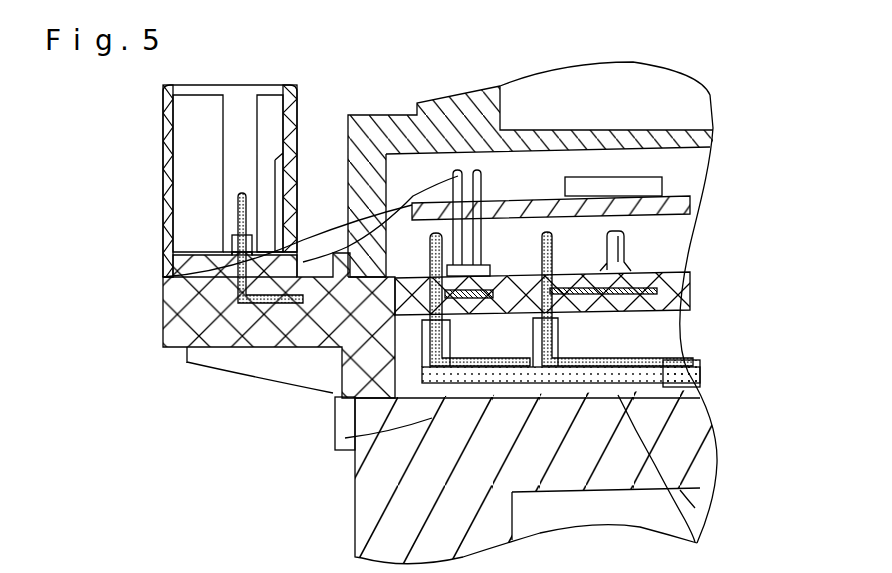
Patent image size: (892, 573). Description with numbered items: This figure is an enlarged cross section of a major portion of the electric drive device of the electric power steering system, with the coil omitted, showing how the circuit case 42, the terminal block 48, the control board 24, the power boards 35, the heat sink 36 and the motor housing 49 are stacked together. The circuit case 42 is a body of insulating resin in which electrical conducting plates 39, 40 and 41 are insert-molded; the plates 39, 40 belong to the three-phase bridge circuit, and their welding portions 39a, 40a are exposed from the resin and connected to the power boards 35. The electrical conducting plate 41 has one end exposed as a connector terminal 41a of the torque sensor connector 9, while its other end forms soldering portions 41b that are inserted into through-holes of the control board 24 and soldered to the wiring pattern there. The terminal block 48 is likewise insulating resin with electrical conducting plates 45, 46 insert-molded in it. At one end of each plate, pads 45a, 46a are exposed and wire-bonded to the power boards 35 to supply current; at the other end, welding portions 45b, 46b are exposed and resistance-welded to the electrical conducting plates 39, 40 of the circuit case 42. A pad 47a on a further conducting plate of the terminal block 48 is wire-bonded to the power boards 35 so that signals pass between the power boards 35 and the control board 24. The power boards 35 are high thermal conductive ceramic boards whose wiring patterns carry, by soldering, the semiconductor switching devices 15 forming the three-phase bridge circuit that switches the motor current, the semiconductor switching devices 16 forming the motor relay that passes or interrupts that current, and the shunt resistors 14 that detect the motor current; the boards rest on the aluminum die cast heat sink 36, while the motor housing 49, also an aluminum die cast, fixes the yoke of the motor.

The torque sensor connector 9 is at (163, 128).
The shunt resistor 14 is at (695, 508).
The semiconductor switching device 15 is at (490, 385).
The semiconductor switching device 16 is at (545, 418).
The control board 24 is at (683, 200).
The power board 35 is at (535, 398).
The heat sink 36 is at (672, 457).
The electrical conducting plate 39 is at (503, 258).
The welding portion 39a is at (500, 260).
The electrical conducting plate 40 is at (660, 290).
The welding portion 40a is at (530, 263).
The electrical conducting plate 41 is at (100, 228).
The connector terminal 41a is at (238, 202).
The soldering portion 41b is at (163, 277).
The circuit case 42 is at (167, 335).
The electrical conducting plate 45 is at (222, 392).
The pad 45a is at (333, 393).
The welding portion 45b is at (432, 240).
The electrical conducting plate 46 is at (782, 325).
The pad 46a is at (617, 345).
The welding portion 46b is at (603, 318).
The pad 47a is at (690, 375).
The terminal block 48 is at (665, 465).
The motor housing 49 is at (700, 135).